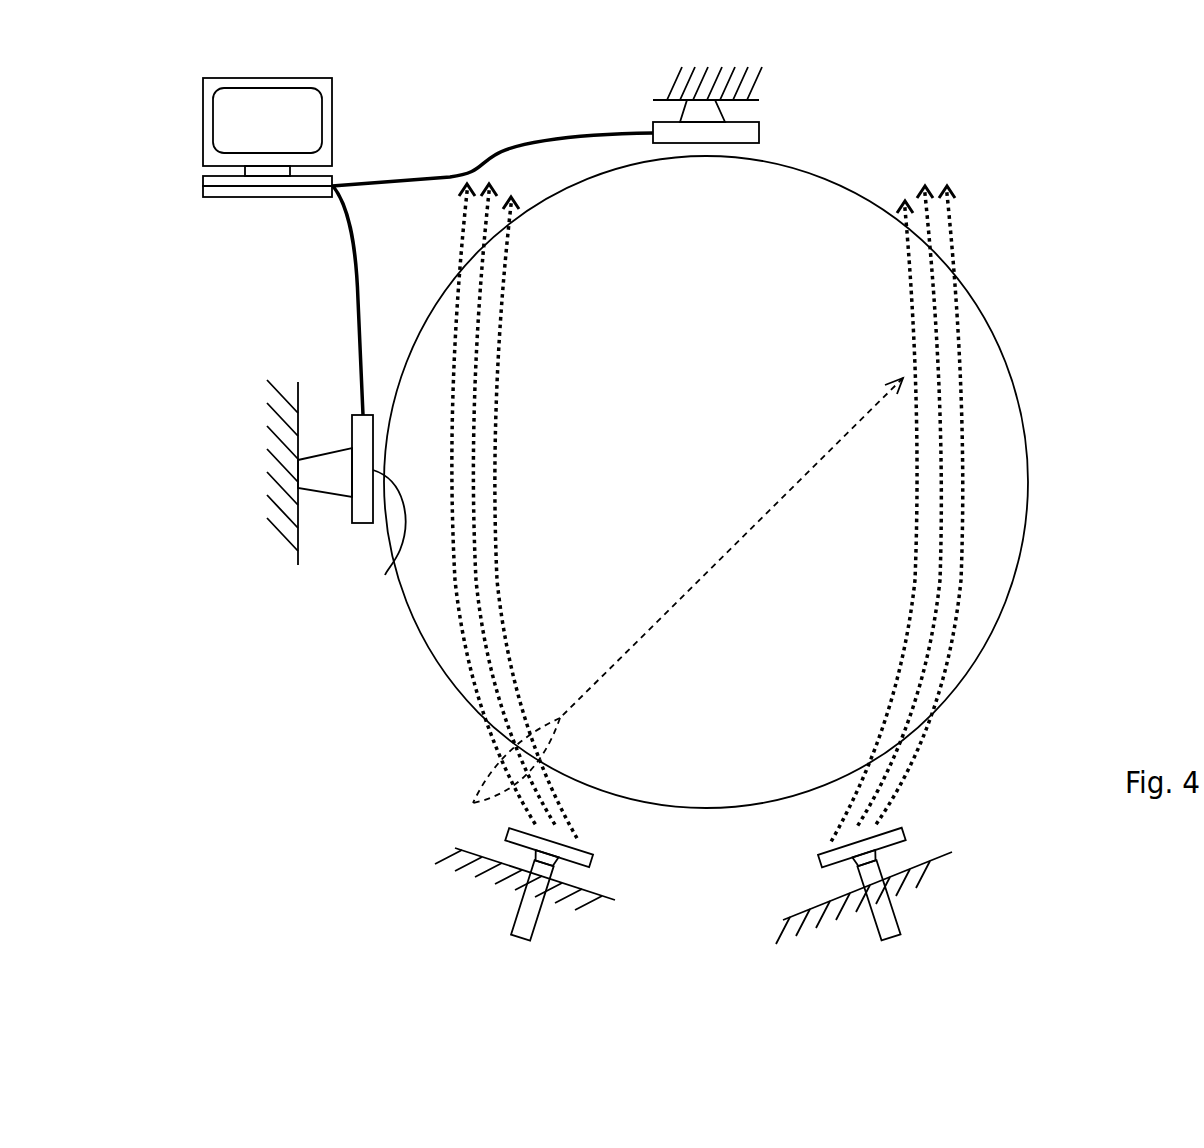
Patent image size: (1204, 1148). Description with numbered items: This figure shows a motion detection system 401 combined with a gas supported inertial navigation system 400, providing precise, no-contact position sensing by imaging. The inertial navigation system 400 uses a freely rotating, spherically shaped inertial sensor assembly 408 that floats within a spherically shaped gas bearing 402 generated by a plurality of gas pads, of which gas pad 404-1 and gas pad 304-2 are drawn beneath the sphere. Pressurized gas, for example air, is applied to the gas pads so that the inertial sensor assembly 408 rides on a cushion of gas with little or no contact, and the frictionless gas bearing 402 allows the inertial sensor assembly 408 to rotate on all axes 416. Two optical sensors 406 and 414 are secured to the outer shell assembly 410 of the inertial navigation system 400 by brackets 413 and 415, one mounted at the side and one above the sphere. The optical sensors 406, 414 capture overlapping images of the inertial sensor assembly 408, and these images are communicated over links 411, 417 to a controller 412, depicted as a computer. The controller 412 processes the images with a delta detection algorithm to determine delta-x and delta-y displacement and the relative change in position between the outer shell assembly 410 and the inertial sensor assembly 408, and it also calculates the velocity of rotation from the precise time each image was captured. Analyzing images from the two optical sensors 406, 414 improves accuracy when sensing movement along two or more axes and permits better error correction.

The gas supported inertial navigation system 400 is at (1062, 220).
The motion detection system 401 is at (320, 698).
The gas bearing 402 is at (497, 570).
The gas pad 404-1 is at (507, 834).
The sensor 304-2 is at (905, 825).
The optical sensor 406 is at (385, 575).
The inertial sensor assembly 408 is at (738, 262).
The outer shell assembly 410 is at (673, 78).
The communication link 411 is at (357, 306).
The controller 412 is at (268, 198).
The bracket 413 is at (323, 493).
The optical sensor 414 is at (762, 132).
The bracket 415 is at (727, 109).
The axes 416 is at (766, 526).
The communication link 417 is at (372, 185).